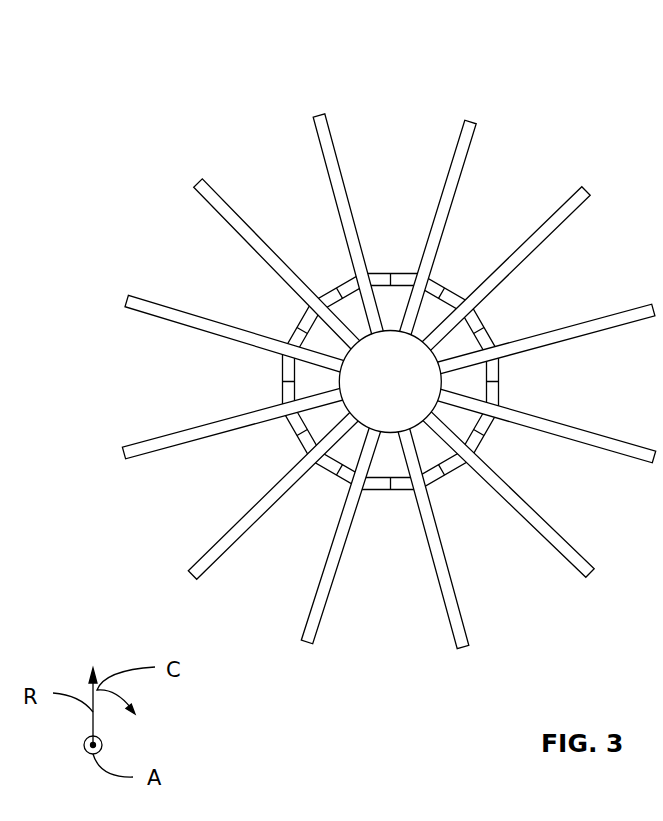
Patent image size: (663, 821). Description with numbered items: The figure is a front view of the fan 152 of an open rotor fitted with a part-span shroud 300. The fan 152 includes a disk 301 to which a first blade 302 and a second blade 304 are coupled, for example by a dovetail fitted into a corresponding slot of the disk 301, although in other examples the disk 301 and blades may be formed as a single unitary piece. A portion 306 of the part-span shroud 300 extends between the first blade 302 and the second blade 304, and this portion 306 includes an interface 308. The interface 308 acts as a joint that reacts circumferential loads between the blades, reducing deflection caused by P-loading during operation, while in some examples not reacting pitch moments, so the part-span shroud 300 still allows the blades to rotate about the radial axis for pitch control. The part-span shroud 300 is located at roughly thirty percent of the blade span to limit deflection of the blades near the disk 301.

The fan 152 is at (344, 330).
The part-span shroud 300 is at (344, 355).
The disk 301 is at (300, 386).
The first blade 302 is at (316, 130).
The second blade 304 is at (478, 128).
The portion of the part-span shroud 306 is at (405, 273).
The interface 308 is at (390, 273).